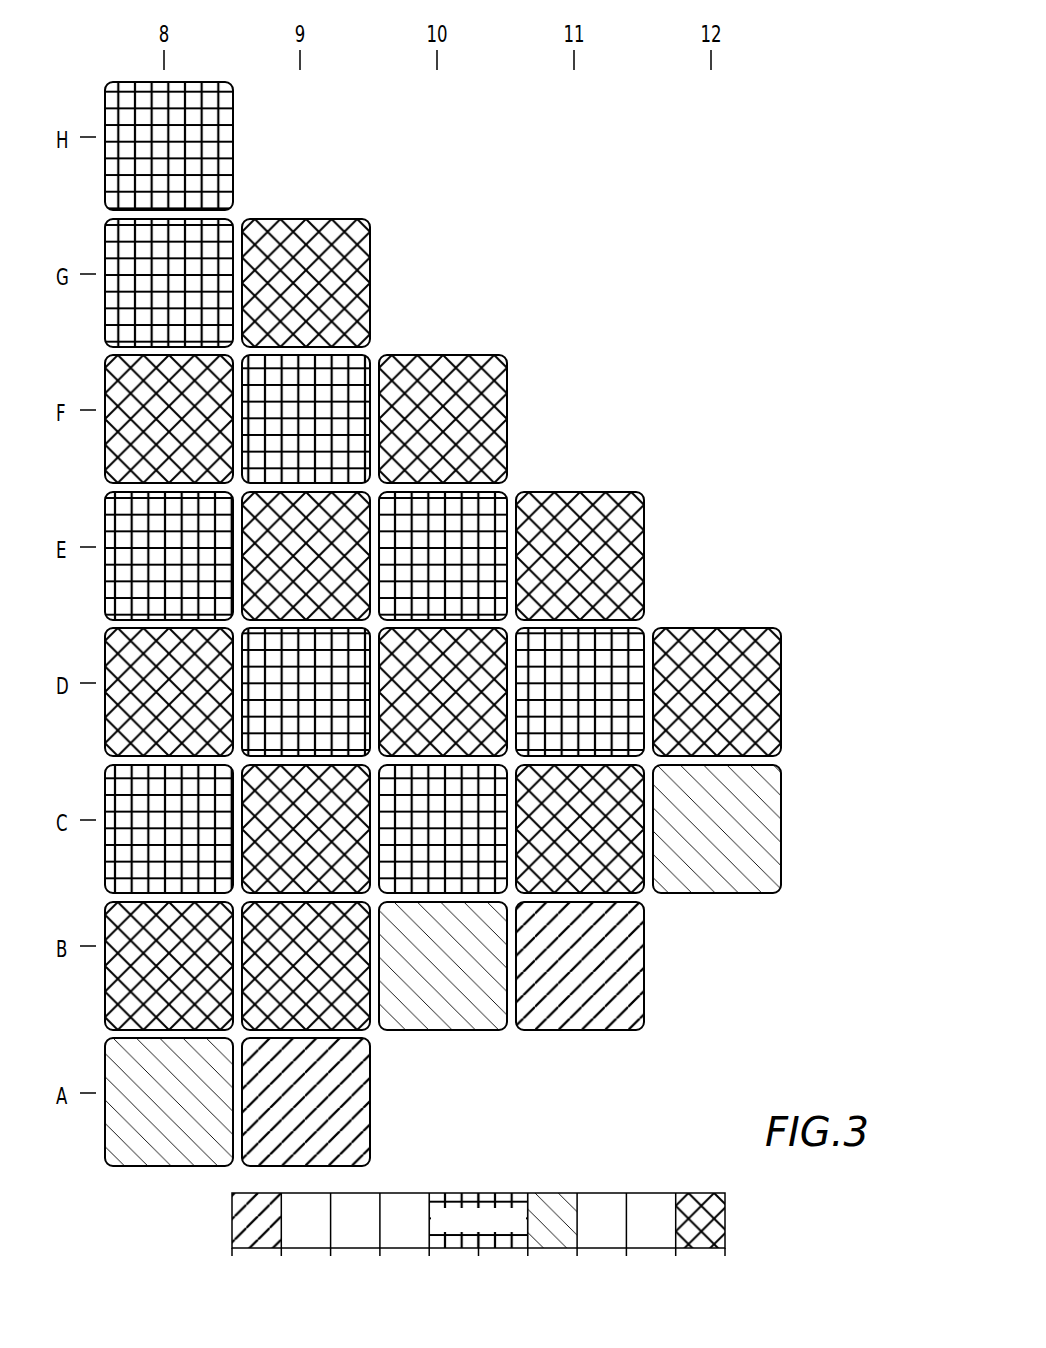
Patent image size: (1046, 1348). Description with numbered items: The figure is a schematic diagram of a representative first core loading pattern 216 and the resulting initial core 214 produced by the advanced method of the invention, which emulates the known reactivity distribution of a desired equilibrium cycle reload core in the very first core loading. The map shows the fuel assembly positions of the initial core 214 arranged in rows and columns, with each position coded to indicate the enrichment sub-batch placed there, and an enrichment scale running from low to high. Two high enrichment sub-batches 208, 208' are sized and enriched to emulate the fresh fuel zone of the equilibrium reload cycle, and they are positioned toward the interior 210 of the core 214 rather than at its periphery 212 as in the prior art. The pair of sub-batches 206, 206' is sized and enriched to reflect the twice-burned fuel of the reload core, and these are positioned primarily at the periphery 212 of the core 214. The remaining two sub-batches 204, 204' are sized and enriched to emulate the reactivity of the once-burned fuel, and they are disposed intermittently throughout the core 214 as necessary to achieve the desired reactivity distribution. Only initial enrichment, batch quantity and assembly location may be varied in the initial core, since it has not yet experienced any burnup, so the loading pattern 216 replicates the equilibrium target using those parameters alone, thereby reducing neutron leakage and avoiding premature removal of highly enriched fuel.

The sub-batch 204 is at (440, 968).
The sub-batch 204' is at (374, 735).
The sub-batch 206 is at (443, 1034).
The sub-batch 206' is at (423, 537).
The high enrichment sub-batch 208 is at (300, 556).
The high enrichment sub-batch 208' is at (442, 848).
The interior 210 is at (112, 62).
The periphery 212 is at (137, 1198).
The initial core 214 is at (333, 139).
The first core loading pattern 216 is at (790, 462).